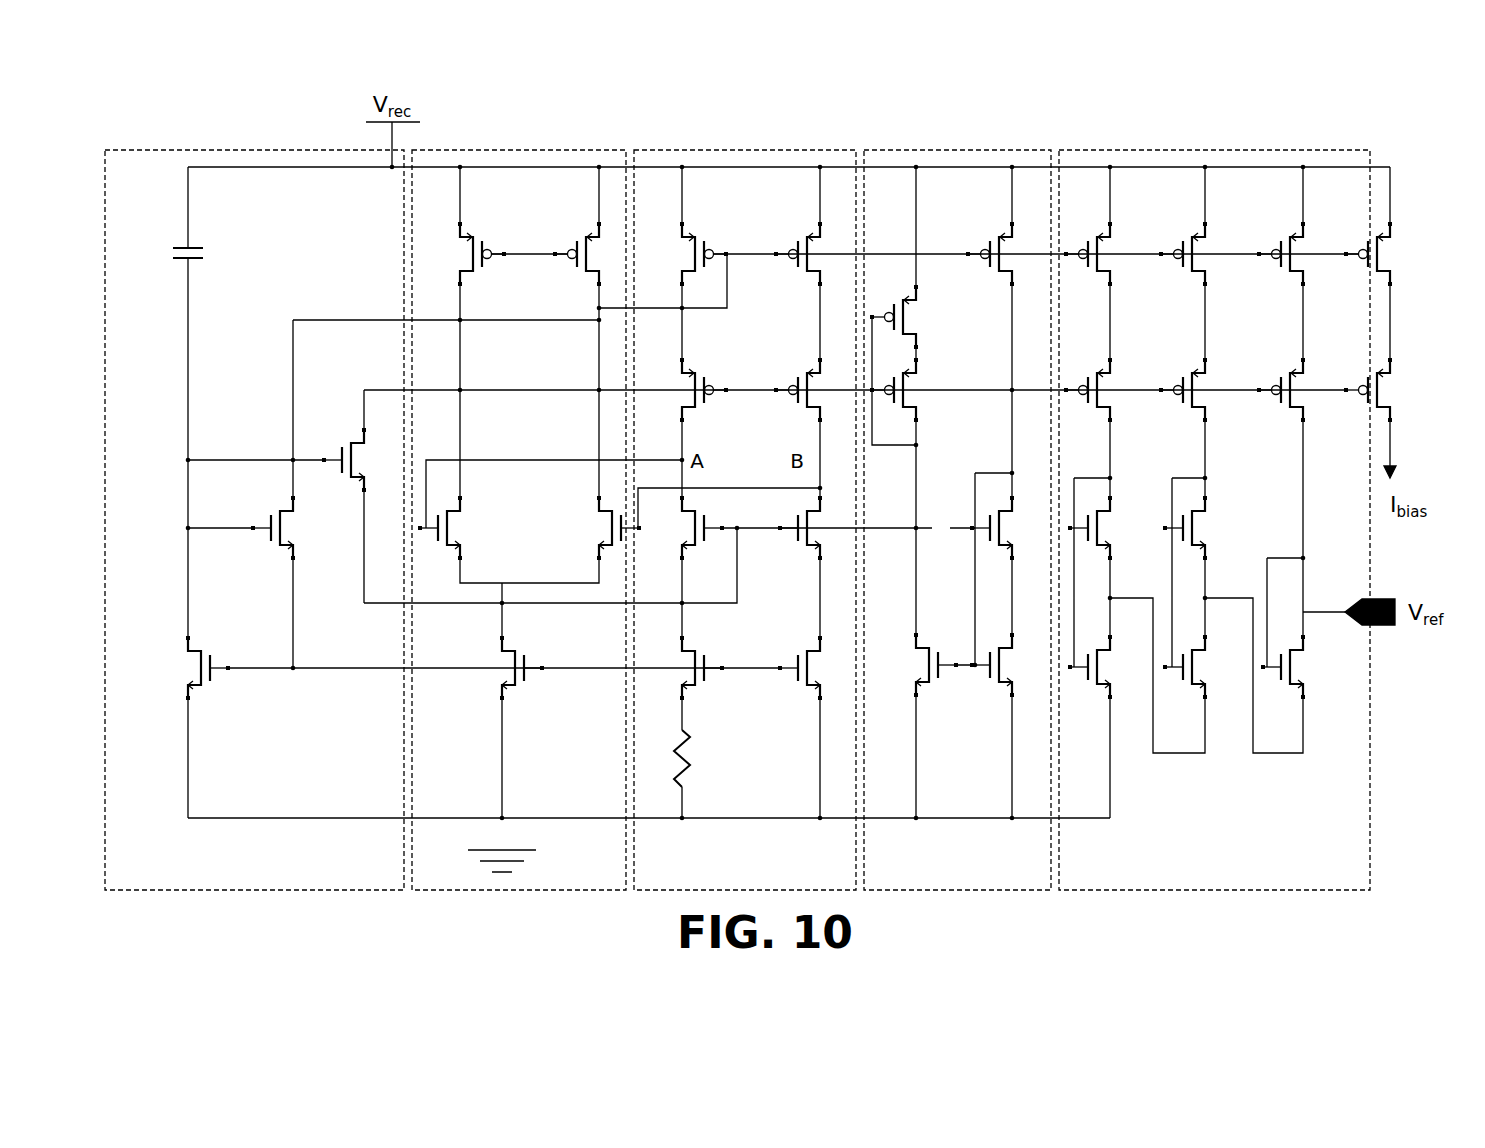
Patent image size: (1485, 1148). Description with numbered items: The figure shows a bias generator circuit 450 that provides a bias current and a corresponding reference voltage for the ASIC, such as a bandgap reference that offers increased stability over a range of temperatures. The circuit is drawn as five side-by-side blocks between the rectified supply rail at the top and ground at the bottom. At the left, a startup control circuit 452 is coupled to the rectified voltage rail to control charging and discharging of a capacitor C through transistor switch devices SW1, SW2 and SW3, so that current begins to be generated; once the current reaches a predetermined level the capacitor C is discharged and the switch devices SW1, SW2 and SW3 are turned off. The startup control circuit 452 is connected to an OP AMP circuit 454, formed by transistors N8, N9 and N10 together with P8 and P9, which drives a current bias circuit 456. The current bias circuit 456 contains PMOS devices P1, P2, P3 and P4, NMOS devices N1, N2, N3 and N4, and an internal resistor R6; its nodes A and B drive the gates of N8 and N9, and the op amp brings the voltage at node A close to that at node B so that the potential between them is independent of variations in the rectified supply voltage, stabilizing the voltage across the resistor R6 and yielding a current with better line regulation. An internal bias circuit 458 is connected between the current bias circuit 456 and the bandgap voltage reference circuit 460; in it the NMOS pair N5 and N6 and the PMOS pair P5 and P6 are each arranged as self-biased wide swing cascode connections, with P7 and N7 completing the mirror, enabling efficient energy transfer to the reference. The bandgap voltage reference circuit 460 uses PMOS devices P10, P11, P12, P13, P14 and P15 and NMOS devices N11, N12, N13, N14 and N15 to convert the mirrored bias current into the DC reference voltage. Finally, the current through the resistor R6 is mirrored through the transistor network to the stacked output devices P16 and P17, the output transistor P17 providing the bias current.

The bias generator circuit 450 is at (1325, 75).
The startup control circuit 452 is at (298, 150).
The OP AMP circuit 454 is at (566, 150).
The current bias circuit 456 is at (776, 150).
The internal bias circuit 458 is at (971, 150).
The bandgap voltage reference circuit 460 is at (1196, 150).
The capacitor C is at (201, 254).
The internal resistor R6 is at (701, 758).
The transistor switch device SW1 is at (173, 668).
The transistor switch device SW2 is at (300, 528).
The transistor switch device SW3 is at (371, 460).
The PMOS transistor P1 is at (820, 254).
The PMOS transistor P2 is at (685, 254).
The PMOS transistor P3 is at (817, 390).
The PMOS transistor P4 is at (680, 390).
The PMOS transistor P5 is at (911, 317).
The PMOS transistor P6 is at (913, 390).
The PMOS transistor P7 is at (1009, 264).
The PMOS transistor P8 is at (464, 254).
The PMOS transistor P9 is at (594, 254).
The PMOS transistor P10 is at (1115, 249).
The PMOS transistor P11 is at (1115, 387).
The PMOS transistor P12 is at (1211, 249).
The PMOS transistor P13 is at (1211, 387).
The PMOS transistor P14 is at (1310, 250).
The PMOS transistor P15 is at (1312, 387).
The PMOS transistor P16 is at (1402, 254).
The output transistor P17 is at (1402, 390).
The NMOS transistor N1 is at (817, 668).
The NMOS transistor N2 is at (683, 667).
The NMOS transistor N3 is at (818, 528).
The NMOS transistor N4 is at (684, 528).
The NMOS transistor N5 is at (1010, 665).
The NMOS transistor N6 is at (1010, 528).
The NMOS transistor N7 is at (917, 665).
The NMOS transistor N8 is at (459, 528).
The NMOS transistor N9 is at (600, 528).
The NMOS transistor N10 is at (490, 669).
The NMOS transistor N11 is at (1114, 667).
The NMOS transistor N12 is at (1114, 528).
The NMOS transistor N13 is at (1210, 667).
The NMOS transistor N14 is at (1210, 528).
The NMOS transistor N15 is at (1309, 667).